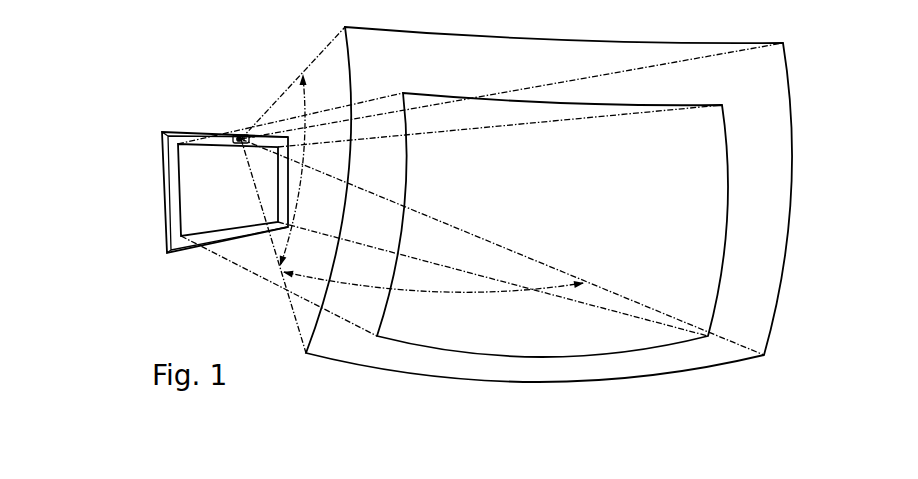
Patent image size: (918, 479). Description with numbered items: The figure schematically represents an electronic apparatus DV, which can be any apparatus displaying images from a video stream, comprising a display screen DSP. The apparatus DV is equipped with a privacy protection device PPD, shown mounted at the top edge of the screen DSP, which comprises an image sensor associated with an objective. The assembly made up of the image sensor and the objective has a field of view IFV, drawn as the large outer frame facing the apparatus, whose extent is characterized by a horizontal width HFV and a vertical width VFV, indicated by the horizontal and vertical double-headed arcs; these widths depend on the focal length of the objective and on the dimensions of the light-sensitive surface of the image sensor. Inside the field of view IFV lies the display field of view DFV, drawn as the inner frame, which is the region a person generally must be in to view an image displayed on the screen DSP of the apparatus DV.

The electronic apparatus DV is at (151, 147).
The display screen DSP is at (189, 211).
The protection device PPD is at (230, 134).
The vertical width of the field of view VFV is at (299, 92).
The horizontal width of the field of view HFV is at (493, 293).
The display field of view DFV is at (482, 354).
The field of view IFV is at (728, 364).